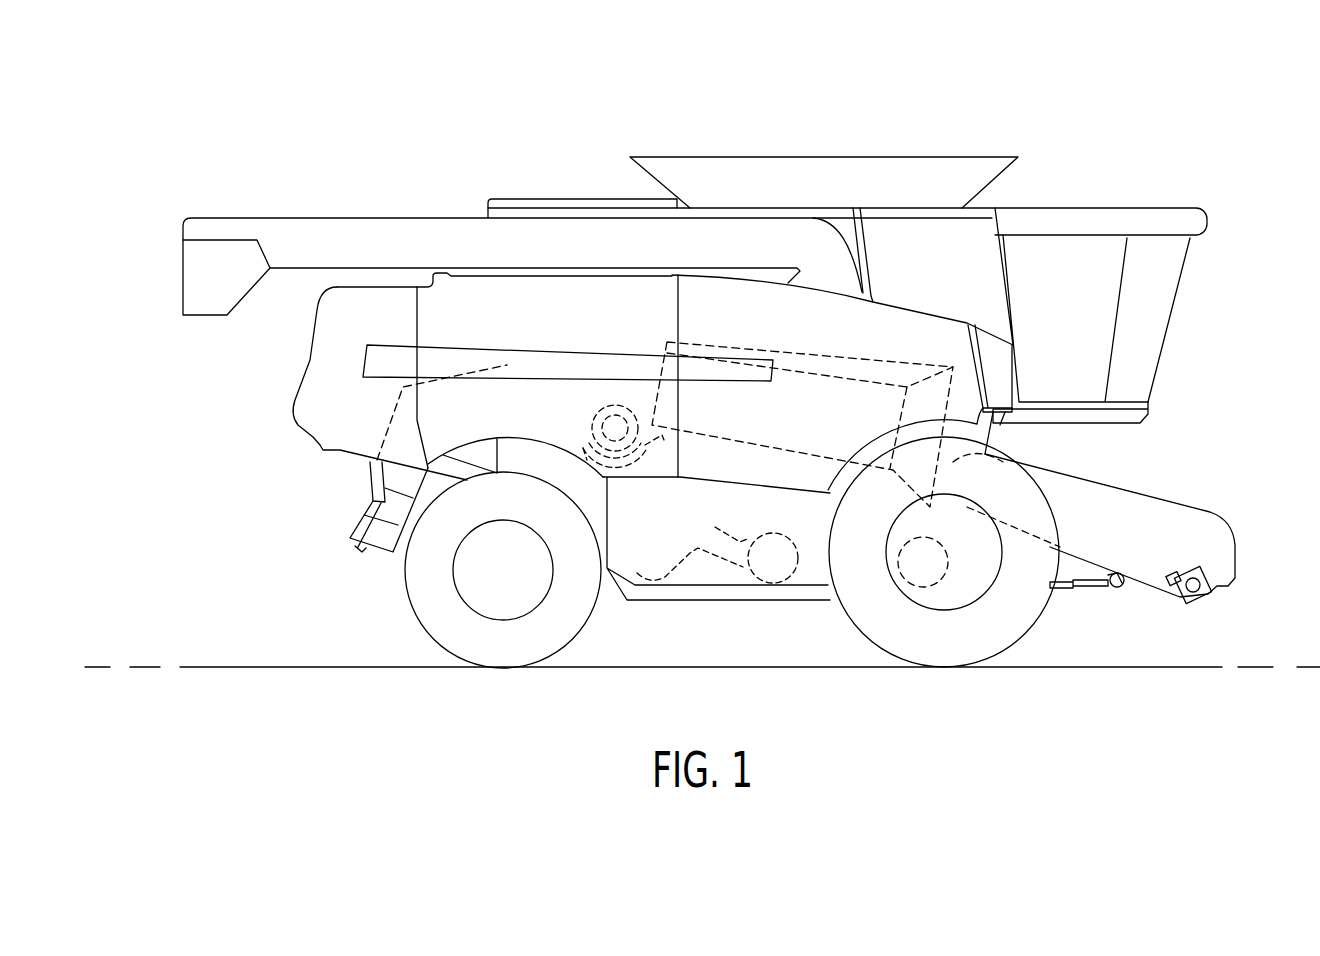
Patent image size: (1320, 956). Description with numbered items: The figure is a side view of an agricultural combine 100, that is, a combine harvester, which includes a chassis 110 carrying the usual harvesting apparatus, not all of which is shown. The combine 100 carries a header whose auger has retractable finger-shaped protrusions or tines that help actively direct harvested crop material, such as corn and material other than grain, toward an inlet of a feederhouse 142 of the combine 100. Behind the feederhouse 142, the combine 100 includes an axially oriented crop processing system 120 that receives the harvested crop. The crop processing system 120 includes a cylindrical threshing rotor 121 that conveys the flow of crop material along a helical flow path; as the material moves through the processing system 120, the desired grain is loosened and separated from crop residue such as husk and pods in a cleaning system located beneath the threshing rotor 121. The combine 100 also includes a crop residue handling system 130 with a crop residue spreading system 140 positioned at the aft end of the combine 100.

The agricultural combine 100 is at (1205, 115).
The chassis 110 is at (658, 603).
The crop processing system 120 is at (813, 343).
The threshing rotor 121 is at (818, 372).
The crop residue handling system 130 is at (548, 345).
The crop residue spreading system 140 is at (358, 520).
The feederhouse 142 is at (1193, 493).